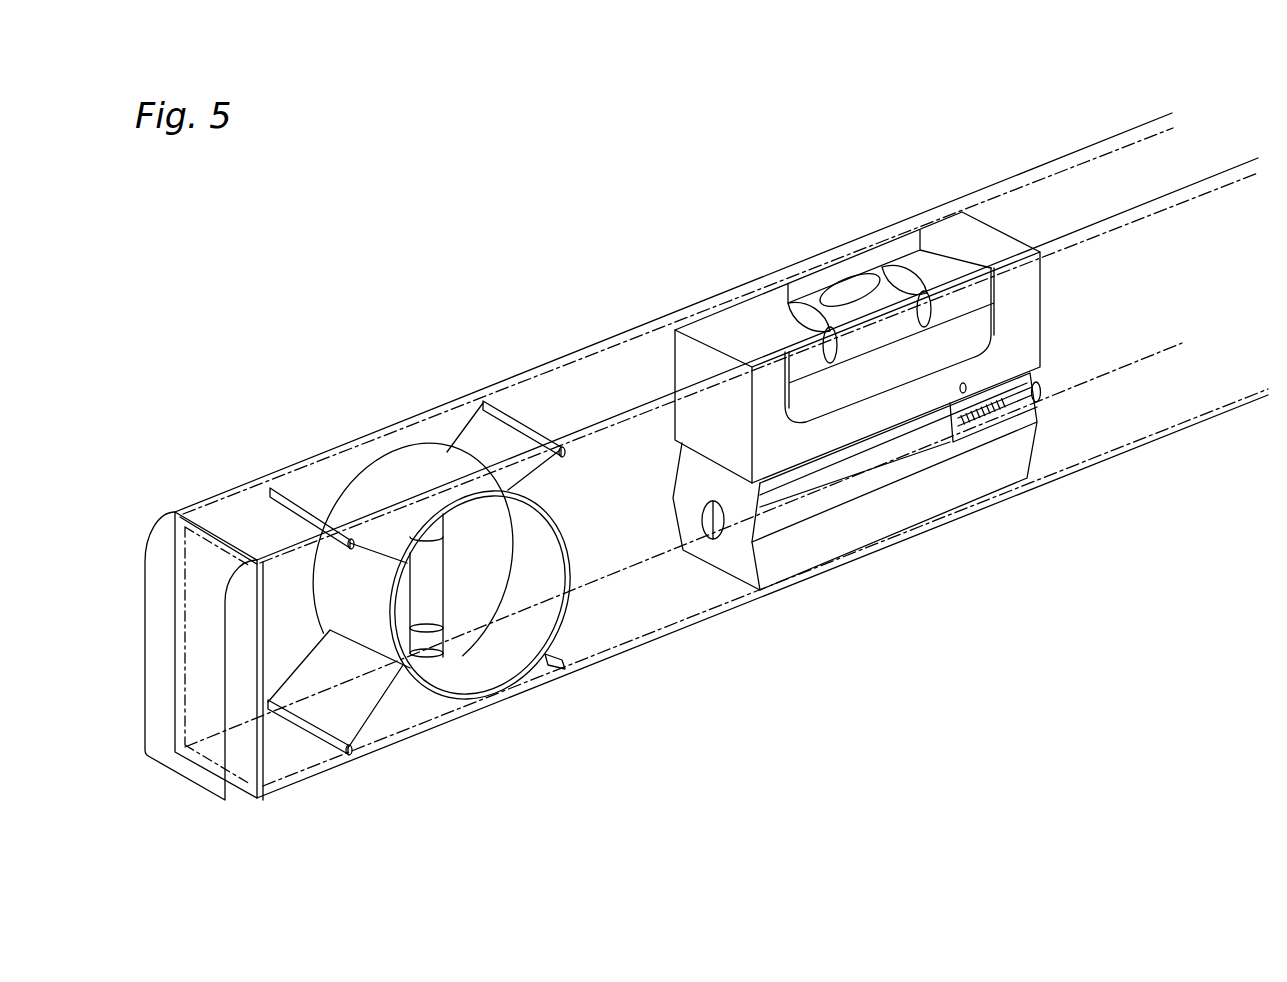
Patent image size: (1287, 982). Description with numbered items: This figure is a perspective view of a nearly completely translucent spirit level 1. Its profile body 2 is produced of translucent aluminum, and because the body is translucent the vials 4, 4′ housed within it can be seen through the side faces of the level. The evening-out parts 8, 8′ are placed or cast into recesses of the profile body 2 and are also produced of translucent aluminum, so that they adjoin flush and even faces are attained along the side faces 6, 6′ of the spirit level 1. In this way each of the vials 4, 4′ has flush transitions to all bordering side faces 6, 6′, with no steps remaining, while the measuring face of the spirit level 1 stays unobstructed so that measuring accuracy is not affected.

The spirit level 1 is at (452, 270).
The profile body 2 is at (228, 524).
The vial 4 is at (777, 328).
The vial 4′ is at (427, 602).
The side face 6 is at (1073, 190).
The side face 6′ is at (1143, 348).
The evening-out part 8 is at (845, 273).
The evening-out part 8′ is at (482, 678).